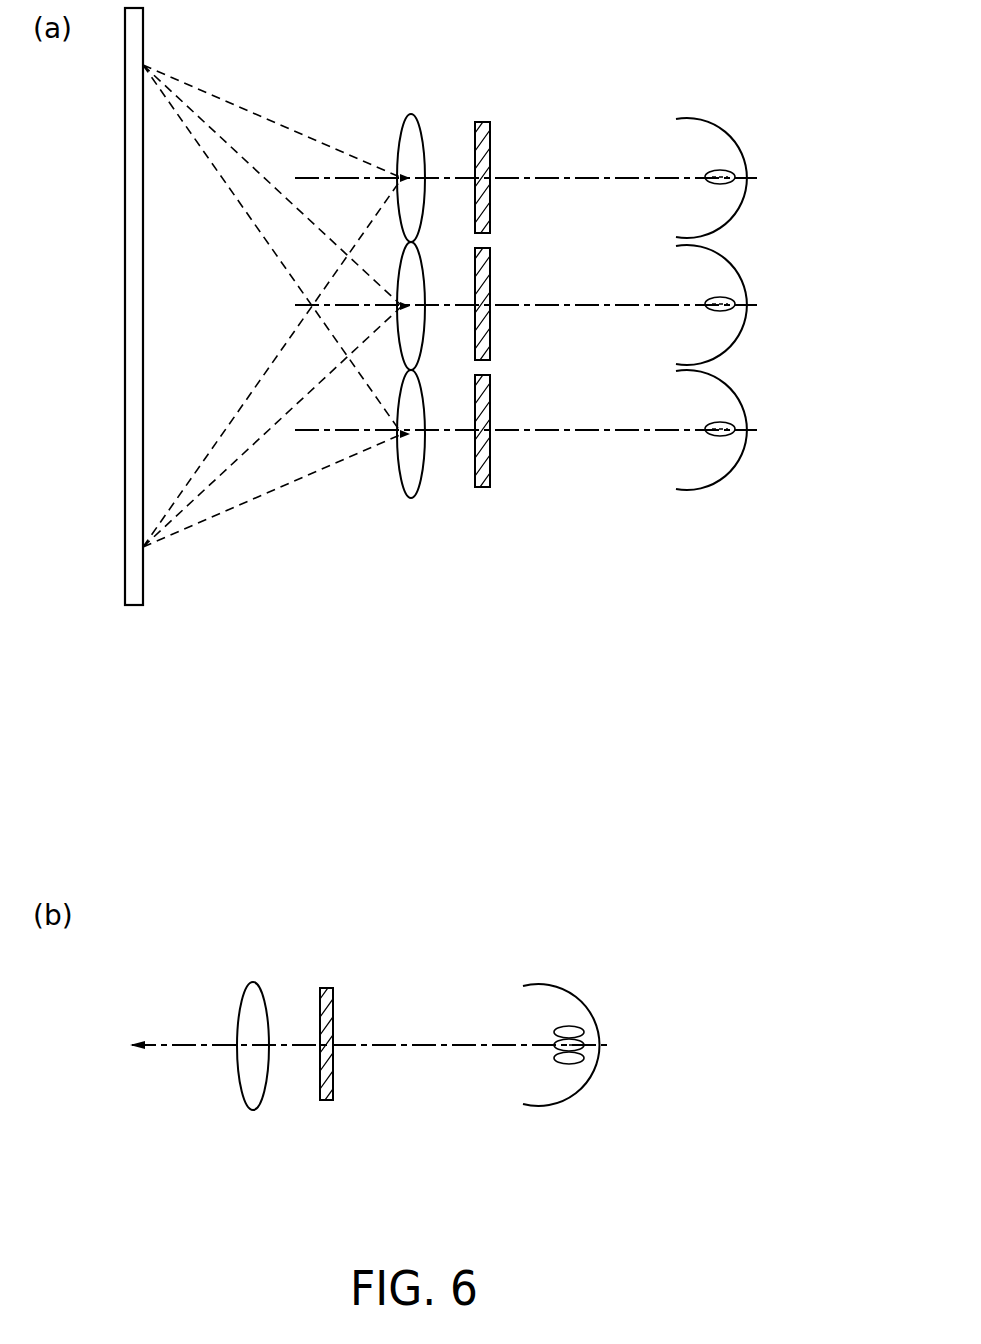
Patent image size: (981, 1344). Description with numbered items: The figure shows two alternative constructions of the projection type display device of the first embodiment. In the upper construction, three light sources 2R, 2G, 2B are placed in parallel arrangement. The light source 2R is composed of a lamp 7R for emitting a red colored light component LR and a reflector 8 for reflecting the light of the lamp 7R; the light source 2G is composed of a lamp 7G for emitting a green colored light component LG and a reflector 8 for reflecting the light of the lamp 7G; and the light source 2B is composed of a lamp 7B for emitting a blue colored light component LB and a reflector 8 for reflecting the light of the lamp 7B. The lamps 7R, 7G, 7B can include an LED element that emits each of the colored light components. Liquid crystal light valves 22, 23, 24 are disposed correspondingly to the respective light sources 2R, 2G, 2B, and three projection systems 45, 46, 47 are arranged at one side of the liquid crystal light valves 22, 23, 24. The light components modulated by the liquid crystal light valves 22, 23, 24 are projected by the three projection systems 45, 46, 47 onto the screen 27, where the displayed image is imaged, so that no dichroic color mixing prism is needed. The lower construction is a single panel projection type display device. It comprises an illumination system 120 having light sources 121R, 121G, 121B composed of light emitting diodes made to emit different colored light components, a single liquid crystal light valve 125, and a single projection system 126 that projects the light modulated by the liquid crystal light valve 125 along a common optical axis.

The screen 27 is at (143, 508).
The projection system 45 is at (413, 128).
The projection system 46 is at (417, 350).
The projection system 47 is at (417, 477).
The liquid crystal light valve 22 is at (490, 130).
The liquid crystal light valve 23 is at (490, 262).
The liquid crystal light valve 24 is at (490, 390).
The reflector 8 is at (710, 122).
The lamp 7R is at (726, 169).
The lamp 7G is at (726, 296).
The lamp 7B is at (726, 421).
The light source 2R is at (737, 225).
The light source 2G is at (737, 352).
The light source 2B is at (737, 477).
The red colored light component LR is at (706, 180).
The green colored light component LG is at (706, 307).
The blue colored light component LB is at (706, 432).
The illumination system 120 is at (543, 978).
The light source 121R is at (577, 1027).
The light source 121G is at (584, 1047).
The light source 121B is at (577, 1064).
The liquid crystal light valve 125 is at (332, 1094).
The projection system 126 is at (259, 1092).